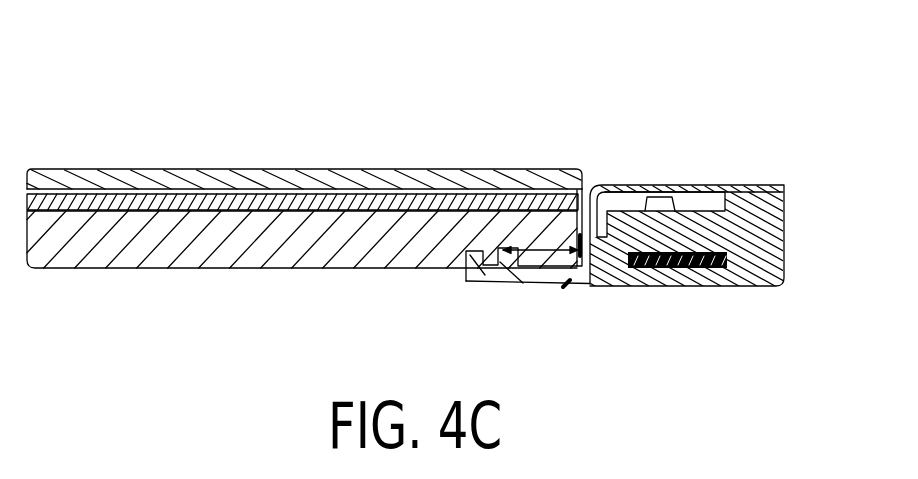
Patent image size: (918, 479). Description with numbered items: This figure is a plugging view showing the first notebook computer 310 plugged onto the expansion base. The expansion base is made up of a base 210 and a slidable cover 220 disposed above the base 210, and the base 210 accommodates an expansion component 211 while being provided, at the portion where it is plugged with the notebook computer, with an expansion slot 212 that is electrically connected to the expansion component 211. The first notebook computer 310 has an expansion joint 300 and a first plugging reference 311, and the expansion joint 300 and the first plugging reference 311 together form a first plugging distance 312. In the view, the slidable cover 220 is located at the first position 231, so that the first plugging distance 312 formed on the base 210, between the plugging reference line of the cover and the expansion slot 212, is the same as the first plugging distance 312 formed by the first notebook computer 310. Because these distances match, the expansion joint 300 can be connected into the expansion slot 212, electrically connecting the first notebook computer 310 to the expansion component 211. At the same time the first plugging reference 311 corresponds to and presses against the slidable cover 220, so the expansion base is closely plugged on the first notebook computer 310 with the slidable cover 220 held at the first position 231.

The base 210 is at (784, 186).
The expansion component 211 is at (690, 263).
The expansion slot 212 is at (467, 277).
The slidable cover 220 is at (705, 185).
The first position 231 is at (567, 283).
The expansion joint 300 is at (440, 268).
The first notebook computer 310 is at (268, 169).
The first plugging reference 311 is at (592, 183).
The first plugging distance 312 is at (527, 279).